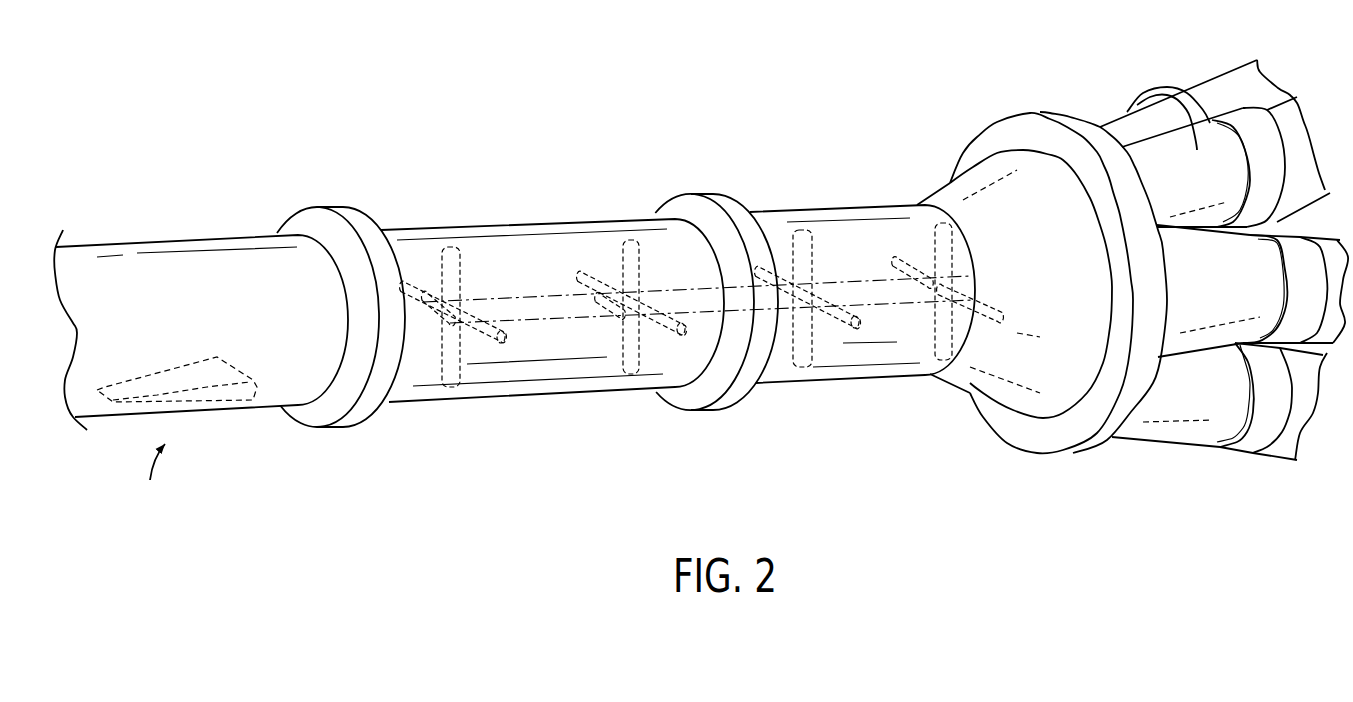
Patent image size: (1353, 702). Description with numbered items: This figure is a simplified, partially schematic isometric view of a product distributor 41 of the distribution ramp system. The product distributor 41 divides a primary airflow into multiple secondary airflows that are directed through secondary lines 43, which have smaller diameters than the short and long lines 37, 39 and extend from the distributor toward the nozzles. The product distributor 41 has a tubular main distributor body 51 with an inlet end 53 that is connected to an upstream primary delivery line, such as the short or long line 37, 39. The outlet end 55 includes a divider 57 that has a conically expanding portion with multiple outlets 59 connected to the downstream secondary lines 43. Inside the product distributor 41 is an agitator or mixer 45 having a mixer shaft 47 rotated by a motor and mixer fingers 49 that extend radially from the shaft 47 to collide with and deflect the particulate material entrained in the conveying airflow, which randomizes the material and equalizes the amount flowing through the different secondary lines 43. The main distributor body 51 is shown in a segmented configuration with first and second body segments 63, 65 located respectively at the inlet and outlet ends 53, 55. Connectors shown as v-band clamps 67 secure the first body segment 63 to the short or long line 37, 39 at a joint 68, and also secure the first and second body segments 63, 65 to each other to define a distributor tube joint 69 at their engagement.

The short line 37 is at (201, 310).
The long line 39 is at (243, 260).
The product distributor 41 is at (677, 290).
The secondary lines 43 is at (1224, 237).
The mixer 45 is at (513, 298).
The mixer shaft 47 is at (872, 277).
The mixer fingers 49 is at (940, 277).
The main distributor body 51 is at (812, 259).
The inlet end 53 is at (669, 304).
The outlet end 55 is at (876, 313).
The divider 57 is at (993, 175).
The outlets 59 is at (1143, 157).
The first body segment 63 is at (425, 382).
The second body segment 65 is at (837, 362).
The v-band clamps 67 is at (527, 266).
The joint 68 is at (371, 201).
The distributor tube joint 69 is at (738, 182).